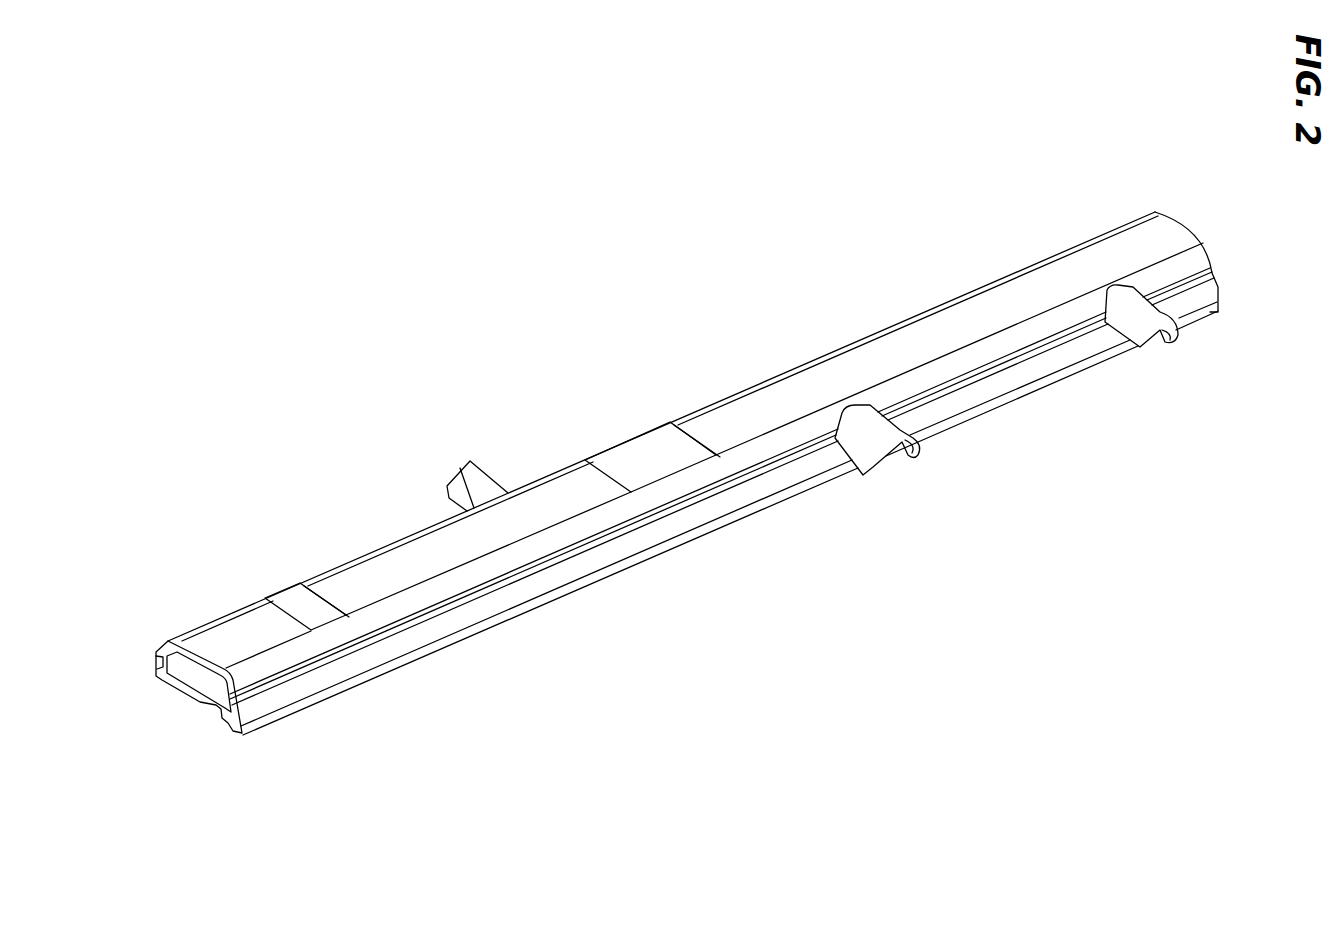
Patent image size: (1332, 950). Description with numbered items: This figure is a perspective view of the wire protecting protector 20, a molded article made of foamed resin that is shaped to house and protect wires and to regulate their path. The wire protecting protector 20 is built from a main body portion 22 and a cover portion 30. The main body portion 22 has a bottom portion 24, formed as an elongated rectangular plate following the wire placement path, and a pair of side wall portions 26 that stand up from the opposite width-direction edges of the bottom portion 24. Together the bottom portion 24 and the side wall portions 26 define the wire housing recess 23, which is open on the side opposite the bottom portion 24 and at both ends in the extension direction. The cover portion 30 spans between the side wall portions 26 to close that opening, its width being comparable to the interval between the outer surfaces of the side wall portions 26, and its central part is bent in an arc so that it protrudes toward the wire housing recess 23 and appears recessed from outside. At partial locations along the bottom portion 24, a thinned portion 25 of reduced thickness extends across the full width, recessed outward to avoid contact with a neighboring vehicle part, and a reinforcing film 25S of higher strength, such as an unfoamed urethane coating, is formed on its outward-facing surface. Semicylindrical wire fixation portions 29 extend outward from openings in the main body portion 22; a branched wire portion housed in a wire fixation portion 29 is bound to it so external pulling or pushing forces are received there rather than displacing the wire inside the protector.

The wire protecting protector 20 is at (726, 397).
The main body portion 22 is at (870, 350).
The wire housing recess 23 is at (205, 712).
The bottom portion 24 is at (212, 640).
The thinned portion 25 is at (663, 473).
The reinforcing film 25S is at (637, 453).
The side wall portions 26 is at (428, 636).
The wire fixation portion 29 is at (465, 477).
The cover portion 30 is at (590, 587).